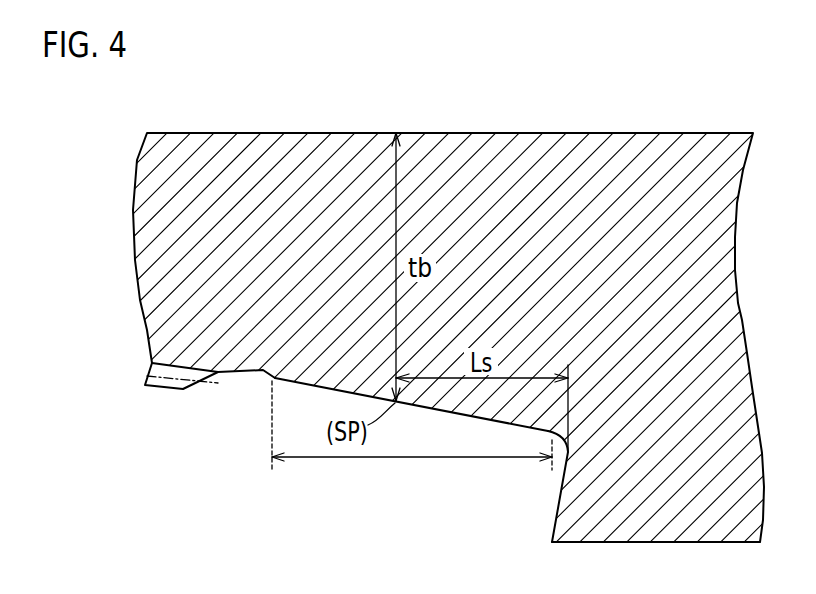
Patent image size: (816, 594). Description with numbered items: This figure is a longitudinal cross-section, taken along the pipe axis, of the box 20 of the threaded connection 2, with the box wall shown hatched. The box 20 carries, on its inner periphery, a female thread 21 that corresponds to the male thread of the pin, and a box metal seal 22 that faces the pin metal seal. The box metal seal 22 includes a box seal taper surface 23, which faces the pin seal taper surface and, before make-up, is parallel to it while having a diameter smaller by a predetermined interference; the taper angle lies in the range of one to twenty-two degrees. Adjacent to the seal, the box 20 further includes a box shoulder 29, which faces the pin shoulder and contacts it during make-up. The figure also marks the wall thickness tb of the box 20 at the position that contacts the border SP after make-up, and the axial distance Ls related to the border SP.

The blade body 2 is at (685, 143).
The box 20 is at (420, 571).
The female thread 21 is at (167, 389).
The box metal seal 22 is at (412, 458).
The box seal taper surface 23 is at (348, 396).
The box shoulder 29 is at (560, 507).